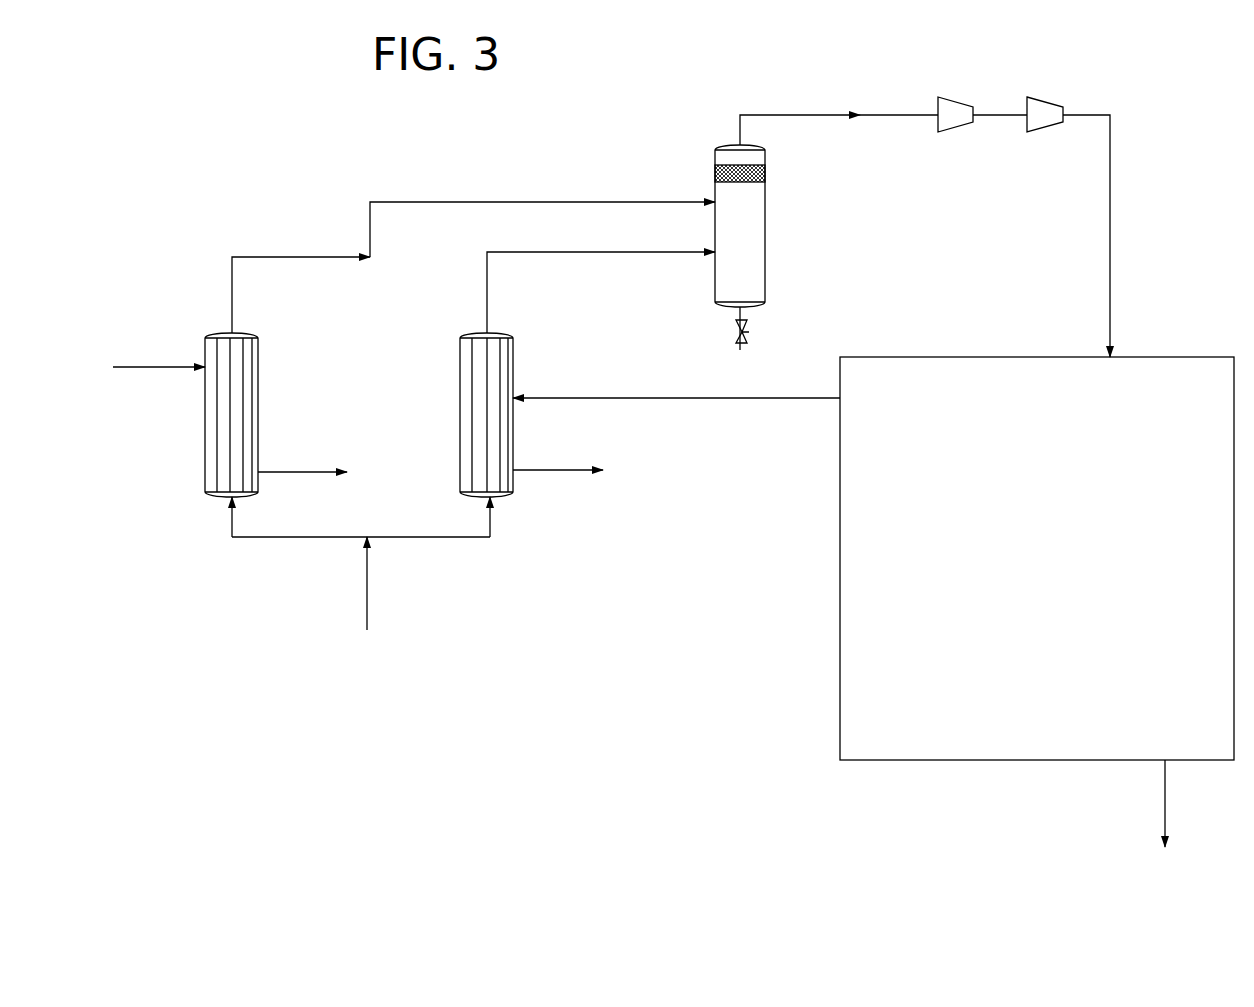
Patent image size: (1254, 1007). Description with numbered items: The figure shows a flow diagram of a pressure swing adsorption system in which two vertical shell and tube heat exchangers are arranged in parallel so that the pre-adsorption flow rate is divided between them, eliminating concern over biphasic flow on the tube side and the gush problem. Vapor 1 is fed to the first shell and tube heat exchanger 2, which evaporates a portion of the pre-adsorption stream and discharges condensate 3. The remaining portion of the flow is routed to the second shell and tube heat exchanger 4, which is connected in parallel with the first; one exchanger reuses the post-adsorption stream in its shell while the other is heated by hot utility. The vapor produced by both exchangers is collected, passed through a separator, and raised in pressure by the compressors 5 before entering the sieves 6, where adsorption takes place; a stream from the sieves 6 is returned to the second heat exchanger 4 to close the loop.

The vapor 1 is at (148, 367).
The shell and tube heat exchanger 2 is at (460, 349).
The condensate 3 is at (320, 470).
The shell and tube heat exchanger 4 is at (574, 374).
The compressors 5 is at (1024, 207).
The sieves 6 is at (873, 602).